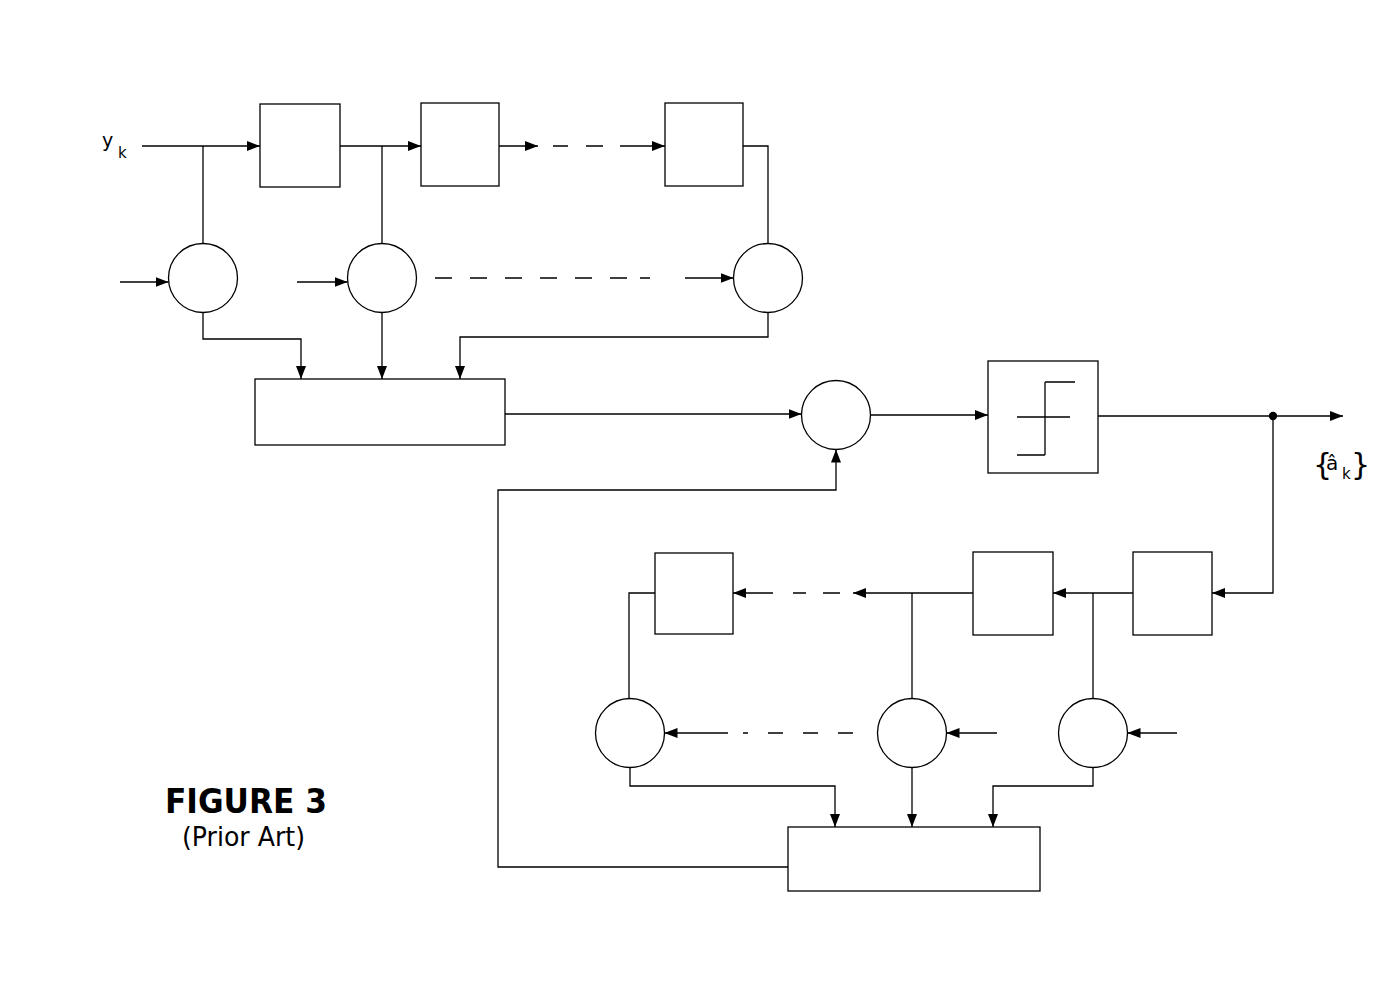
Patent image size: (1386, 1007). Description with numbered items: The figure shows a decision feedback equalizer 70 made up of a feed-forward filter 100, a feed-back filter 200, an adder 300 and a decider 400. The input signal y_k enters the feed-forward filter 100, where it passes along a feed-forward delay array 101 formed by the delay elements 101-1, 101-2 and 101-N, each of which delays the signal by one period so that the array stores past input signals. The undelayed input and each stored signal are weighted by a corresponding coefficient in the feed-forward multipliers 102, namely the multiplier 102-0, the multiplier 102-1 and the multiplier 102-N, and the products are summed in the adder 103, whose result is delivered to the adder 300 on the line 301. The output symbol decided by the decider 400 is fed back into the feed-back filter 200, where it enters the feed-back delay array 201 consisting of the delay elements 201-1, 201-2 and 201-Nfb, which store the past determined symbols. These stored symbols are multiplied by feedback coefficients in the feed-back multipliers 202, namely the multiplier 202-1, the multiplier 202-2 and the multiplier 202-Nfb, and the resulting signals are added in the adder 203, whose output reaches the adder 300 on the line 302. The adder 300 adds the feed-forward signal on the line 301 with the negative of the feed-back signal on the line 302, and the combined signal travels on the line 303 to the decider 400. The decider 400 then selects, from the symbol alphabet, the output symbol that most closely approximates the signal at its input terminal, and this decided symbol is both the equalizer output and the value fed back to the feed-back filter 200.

The decision feedback equalizer 70 is at (599, 80).
The feed-forward filter 100 is at (403, 520).
The feed-forward delay array 101 is at (755, 122).
The feed-forward delay element 101-1 is at (290, 104).
The feed-forward delay element 101-2 is at (452, 103).
The feed-forward delay element 101-N is at (705, 103).
The feed-forward multipliers 102 is at (815, 282).
The feed-forward multiplier 102-0 is at (223, 250).
The feed-forward multiplier 102-1 is at (403, 250).
The feed-forward multiplier 102-N is at (792, 252).
The adder 103 is at (223, 433).
The feed-back filter 200 is at (1283, 828).
The feed-back delay array 201 is at (1230, 615).
The feed-back delay element 201-1 is at (1167, 552).
The feed-back delay element 201-2 is at (1005, 552).
The feed-back delay element 201-Nfb is at (668, 553).
The feed-back multipliers 202 is at (1210, 738).
The feed-back multiplier 202-1 is at (1070, 705).
The feed-back multiplier 202-2 is at (888, 705).
The feed-back multiplier 202-Nfb is at (660, 705).
The adder 203 is at (1072, 853).
The adder 300 is at (838, 378).
The line 301 is at (736, 425).
The line 302 is at (845, 480).
The adder output signal 303 is at (927, 408).
The decider 400 is at (1042, 361).